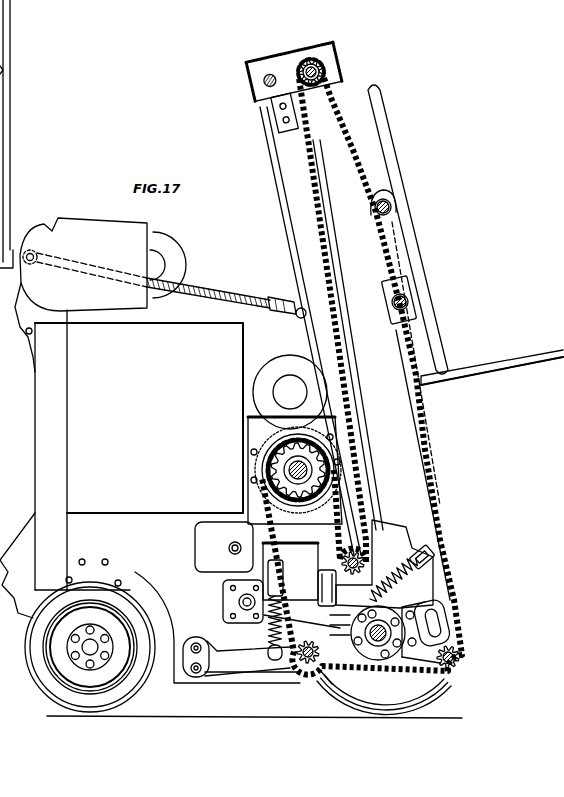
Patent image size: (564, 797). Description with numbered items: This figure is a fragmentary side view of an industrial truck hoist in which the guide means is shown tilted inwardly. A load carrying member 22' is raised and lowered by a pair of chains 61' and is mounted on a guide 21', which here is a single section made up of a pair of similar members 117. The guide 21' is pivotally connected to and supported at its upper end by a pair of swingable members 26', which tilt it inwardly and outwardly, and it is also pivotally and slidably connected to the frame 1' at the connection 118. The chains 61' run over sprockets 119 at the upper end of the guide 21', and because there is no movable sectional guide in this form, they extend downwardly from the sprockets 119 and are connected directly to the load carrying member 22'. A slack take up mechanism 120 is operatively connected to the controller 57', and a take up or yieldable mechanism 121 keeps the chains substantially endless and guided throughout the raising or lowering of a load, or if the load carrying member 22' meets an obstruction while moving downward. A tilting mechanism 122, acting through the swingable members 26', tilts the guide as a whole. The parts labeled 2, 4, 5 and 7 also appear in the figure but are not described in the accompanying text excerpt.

The frame 1' is at (199, 621).
The body housing 2 is at (121, 464).
The rear drive wheel 4 is at (427, 700).
The front wheel 5 is at (136, 703).
The upright post 7 is at (6, 168).
The guide 21' is at (381, 370).
The load carrying member 22' is at (465, 235).
The swingable members 26' is at (306, 331).
The controller 57' is at (295, 495).
The chains 61' is at (362, 383).
The similar members 117 is at (418, 472).
The pivotal and slidable connection 118 is at (459, 612).
The sprockets 119 is at (298, 89).
The slack take up mechanism 120 is at (400, 558).
The take up or yieldable mechanism 121 is at (243, 651).
The tilting mechanism 122 is at (160, 295).